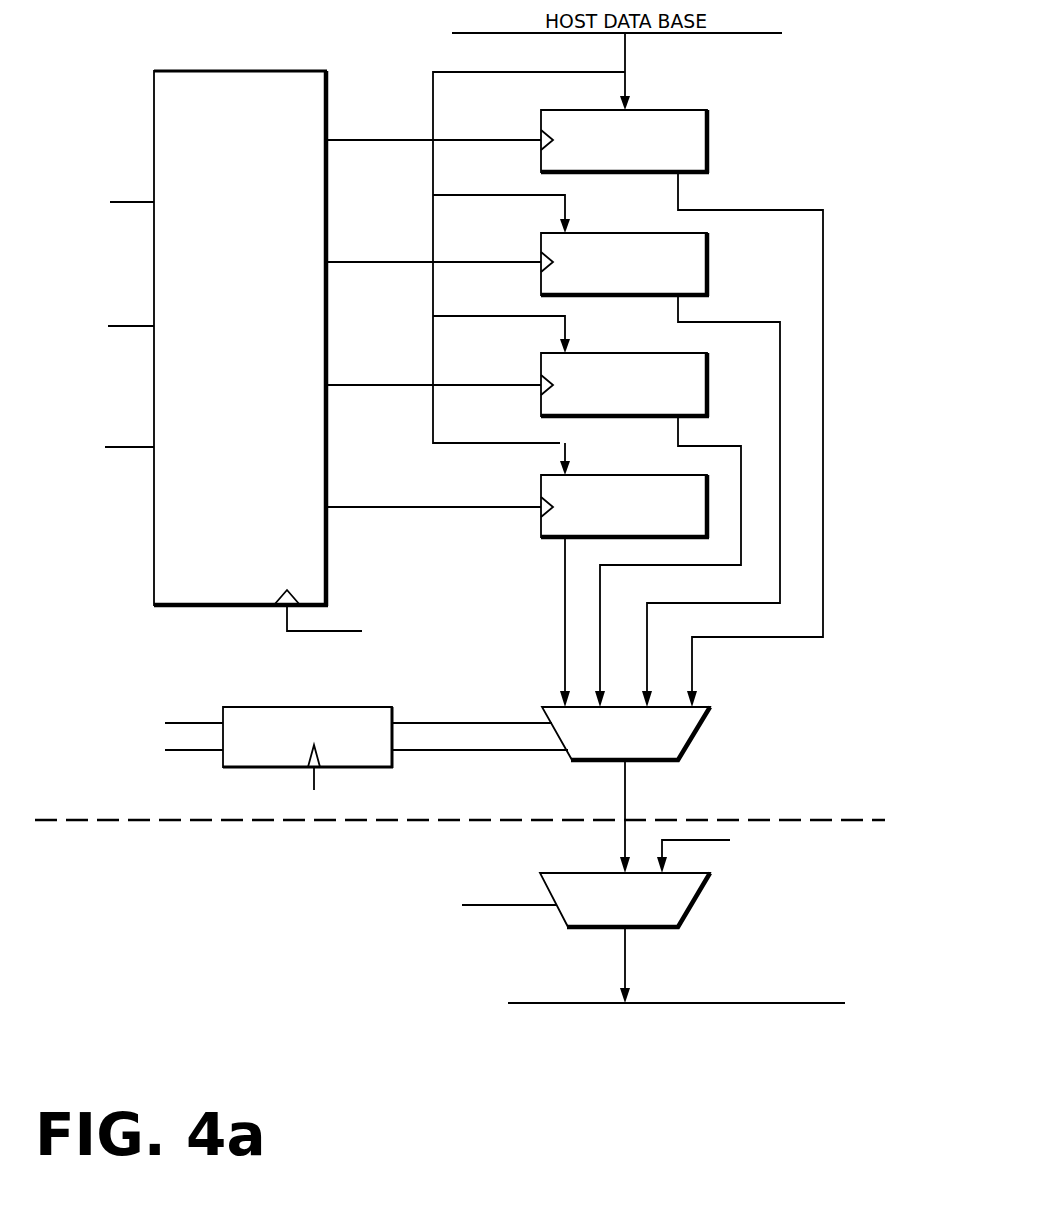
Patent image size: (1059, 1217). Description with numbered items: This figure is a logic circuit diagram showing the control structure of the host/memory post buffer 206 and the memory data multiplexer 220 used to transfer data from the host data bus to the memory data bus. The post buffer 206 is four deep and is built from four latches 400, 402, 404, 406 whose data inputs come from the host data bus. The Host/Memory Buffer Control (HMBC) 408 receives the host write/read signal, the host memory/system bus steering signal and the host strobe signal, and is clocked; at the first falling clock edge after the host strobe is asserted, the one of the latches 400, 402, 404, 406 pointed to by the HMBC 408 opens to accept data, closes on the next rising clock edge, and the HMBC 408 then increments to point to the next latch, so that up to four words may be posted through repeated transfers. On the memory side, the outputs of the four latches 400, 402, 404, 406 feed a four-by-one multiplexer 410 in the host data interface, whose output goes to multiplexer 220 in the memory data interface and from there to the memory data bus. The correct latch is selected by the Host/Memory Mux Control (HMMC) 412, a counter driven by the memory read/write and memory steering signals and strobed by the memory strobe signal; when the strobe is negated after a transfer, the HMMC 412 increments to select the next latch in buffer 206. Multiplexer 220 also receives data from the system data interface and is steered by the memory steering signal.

The latch 400 is at (682, 408).
The latch 402 is at (660, 470).
The latch 404 is at (641, 530).
The latch 406 is at (625, 591).
The host/memory buffer control (HMBC) 408 is at (238, 356).
The 4-by-1 multiplexer 410 is at (626, 790).
The host/memory mux control (HMMC) 412 is at (334, 761).
The host/memory post buffer 206 is at (460, 807).
The memory data multiplexer 220 is at (636, 916).